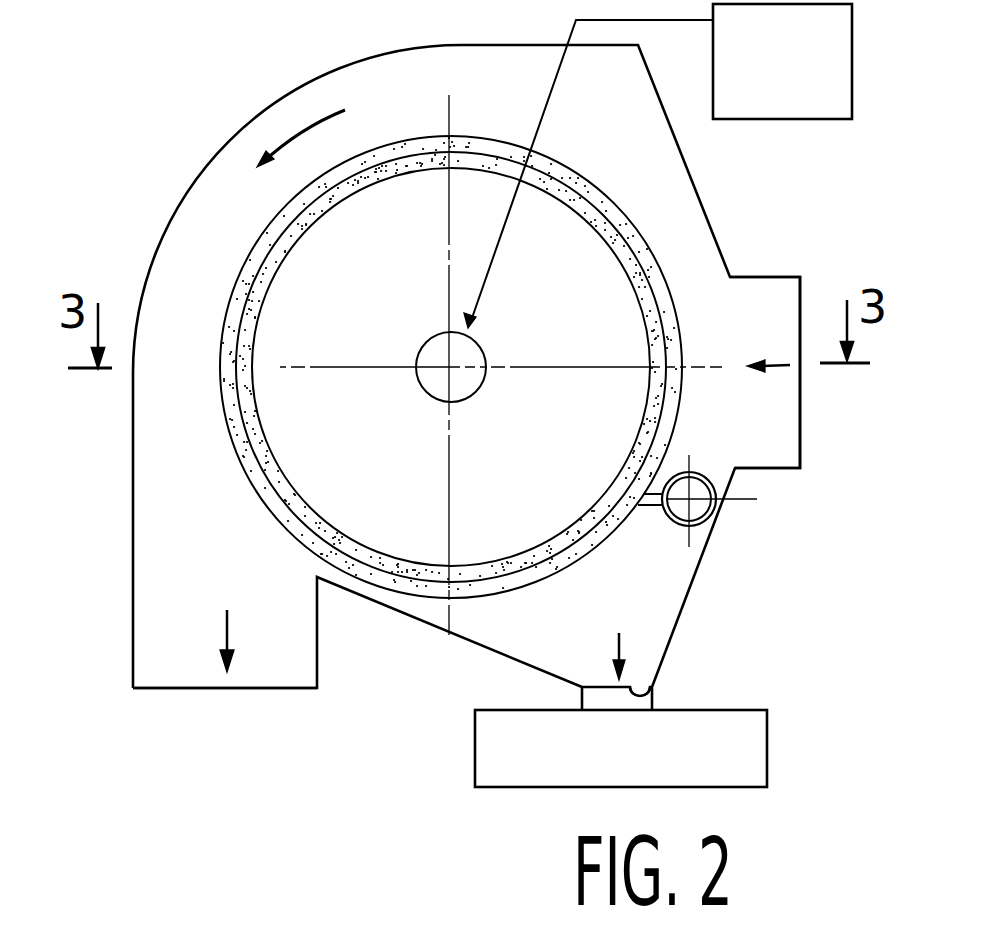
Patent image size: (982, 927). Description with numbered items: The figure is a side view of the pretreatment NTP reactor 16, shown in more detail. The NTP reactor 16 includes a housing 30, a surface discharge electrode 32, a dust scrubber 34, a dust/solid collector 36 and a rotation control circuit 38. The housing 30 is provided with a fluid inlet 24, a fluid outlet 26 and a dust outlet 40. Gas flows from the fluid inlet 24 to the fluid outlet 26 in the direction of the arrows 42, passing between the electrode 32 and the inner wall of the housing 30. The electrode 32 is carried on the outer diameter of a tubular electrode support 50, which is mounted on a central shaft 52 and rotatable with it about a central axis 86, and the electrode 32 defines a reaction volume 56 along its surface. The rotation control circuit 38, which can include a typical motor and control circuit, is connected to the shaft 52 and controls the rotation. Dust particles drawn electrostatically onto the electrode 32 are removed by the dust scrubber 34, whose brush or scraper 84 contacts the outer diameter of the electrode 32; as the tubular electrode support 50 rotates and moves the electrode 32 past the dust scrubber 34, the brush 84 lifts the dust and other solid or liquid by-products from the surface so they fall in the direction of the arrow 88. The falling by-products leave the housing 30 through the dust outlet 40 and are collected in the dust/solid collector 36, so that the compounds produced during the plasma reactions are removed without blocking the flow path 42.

The NTP reactor 16 is at (424, 377).
The fluid inlet 24 is at (801, 292).
The fluid outlet 26 is at (161, 690).
The housing 30 is at (192, 164).
The surface discharge electrode 32 is at (617, 196).
The dust scrubber 34 is at (661, 534).
The dust/solid collector 36 is at (767, 720).
The rotation control circuit 38 is at (852, 76).
The dust outlet 40 is at (654, 691).
The arrows (gas flow direction) 42 is at (318, 127).
The tubular electrode support 50 is at (638, 268).
The central shaft 52 is at (417, 388).
The reaction volume 56 is at (553, 146).
The brush or scraper 84 is at (643, 507).
The central axis 86 is at (453, 369).
The arrow (falling by-products direction) 88 is at (615, 636).